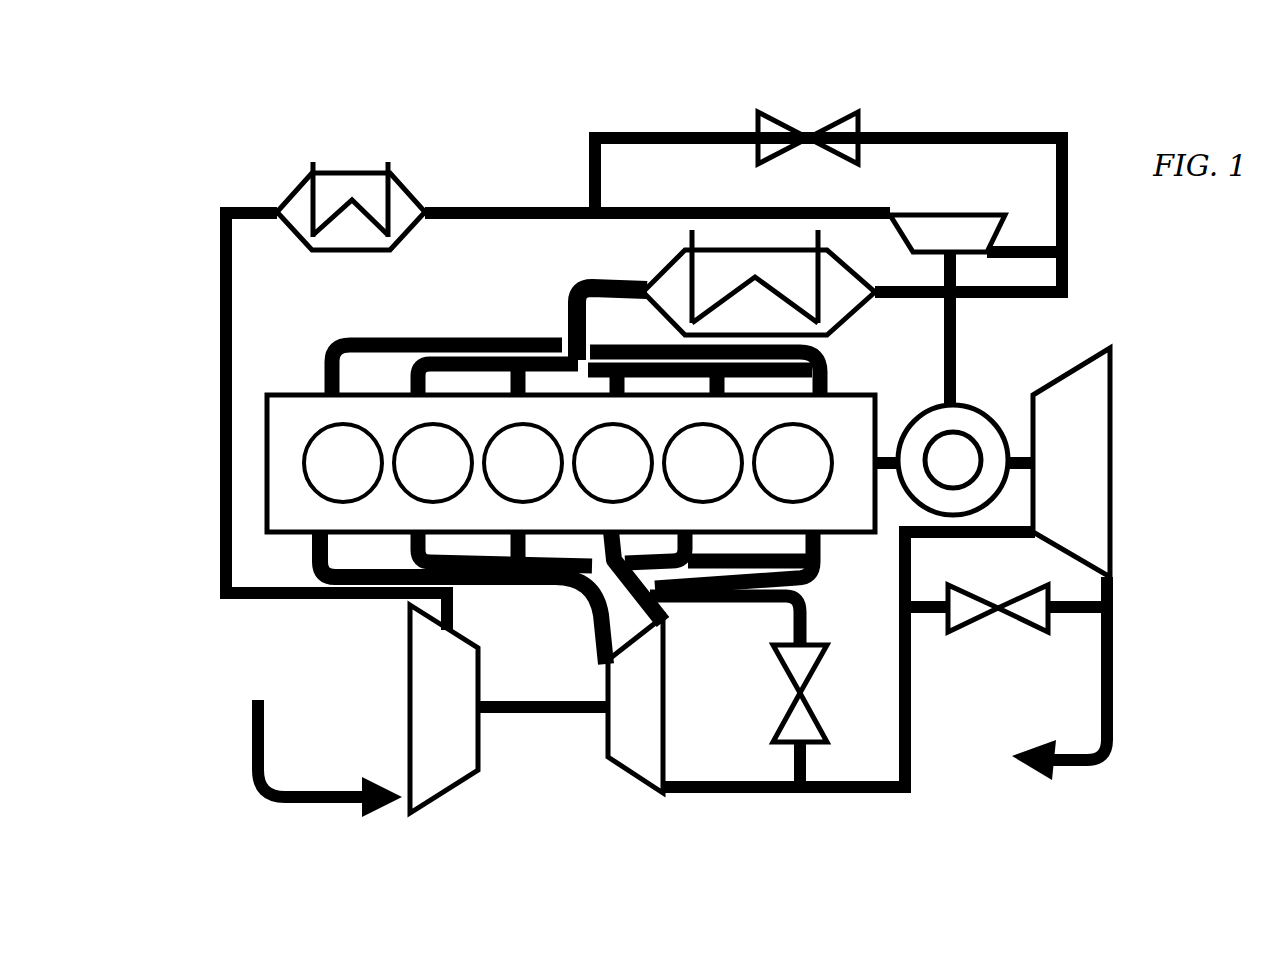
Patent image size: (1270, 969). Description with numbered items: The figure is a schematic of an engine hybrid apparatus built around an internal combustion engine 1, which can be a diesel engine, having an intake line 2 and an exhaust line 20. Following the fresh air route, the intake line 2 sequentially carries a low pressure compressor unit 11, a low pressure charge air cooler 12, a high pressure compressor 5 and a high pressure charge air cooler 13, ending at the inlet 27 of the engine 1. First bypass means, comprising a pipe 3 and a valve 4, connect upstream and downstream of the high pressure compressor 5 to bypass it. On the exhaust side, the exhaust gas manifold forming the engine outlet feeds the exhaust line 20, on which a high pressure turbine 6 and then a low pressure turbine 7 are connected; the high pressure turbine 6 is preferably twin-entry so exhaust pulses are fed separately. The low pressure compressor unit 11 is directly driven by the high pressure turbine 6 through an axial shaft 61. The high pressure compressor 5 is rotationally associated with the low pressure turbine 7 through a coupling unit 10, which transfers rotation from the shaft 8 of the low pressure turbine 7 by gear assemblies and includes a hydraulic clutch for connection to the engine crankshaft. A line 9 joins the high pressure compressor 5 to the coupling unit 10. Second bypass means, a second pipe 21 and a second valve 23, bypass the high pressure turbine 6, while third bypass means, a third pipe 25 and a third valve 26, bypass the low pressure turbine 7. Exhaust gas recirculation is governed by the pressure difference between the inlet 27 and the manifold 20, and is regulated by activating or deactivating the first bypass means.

The internal combustion engine 1 is at (293, 482).
The intake line 2 is at (255, 590).
The pipe 3 is at (590, 178).
The valve 4 is at (806, 138).
The high pressure compressor 5 is at (930, 228).
The high pressure turbine 6 is at (638, 740).
The low pressure turbine 7 is at (1077, 477).
The shaft 8 is at (1018, 450).
The connecting line 9 is at (958, 330).
The coupling unit 10 is at (952, 502).
The low pressure compressor unit 11 is at (430, 760).
The low pressure charge air cooler 12 is at (368, 200).
The high pressure charge air cooler 13 is at (720, 263).
The exhaust line 20 is at (590, 618).
The second pipe 21 is at (713, 607).
The second valve 23 is at (790, 728).
The third pipe 25 is at (932, 616).
The third valve 26 is at (973, 610).
The inlet 27 is at (552, 306).
The axial shaft 61 is at (525, 693).